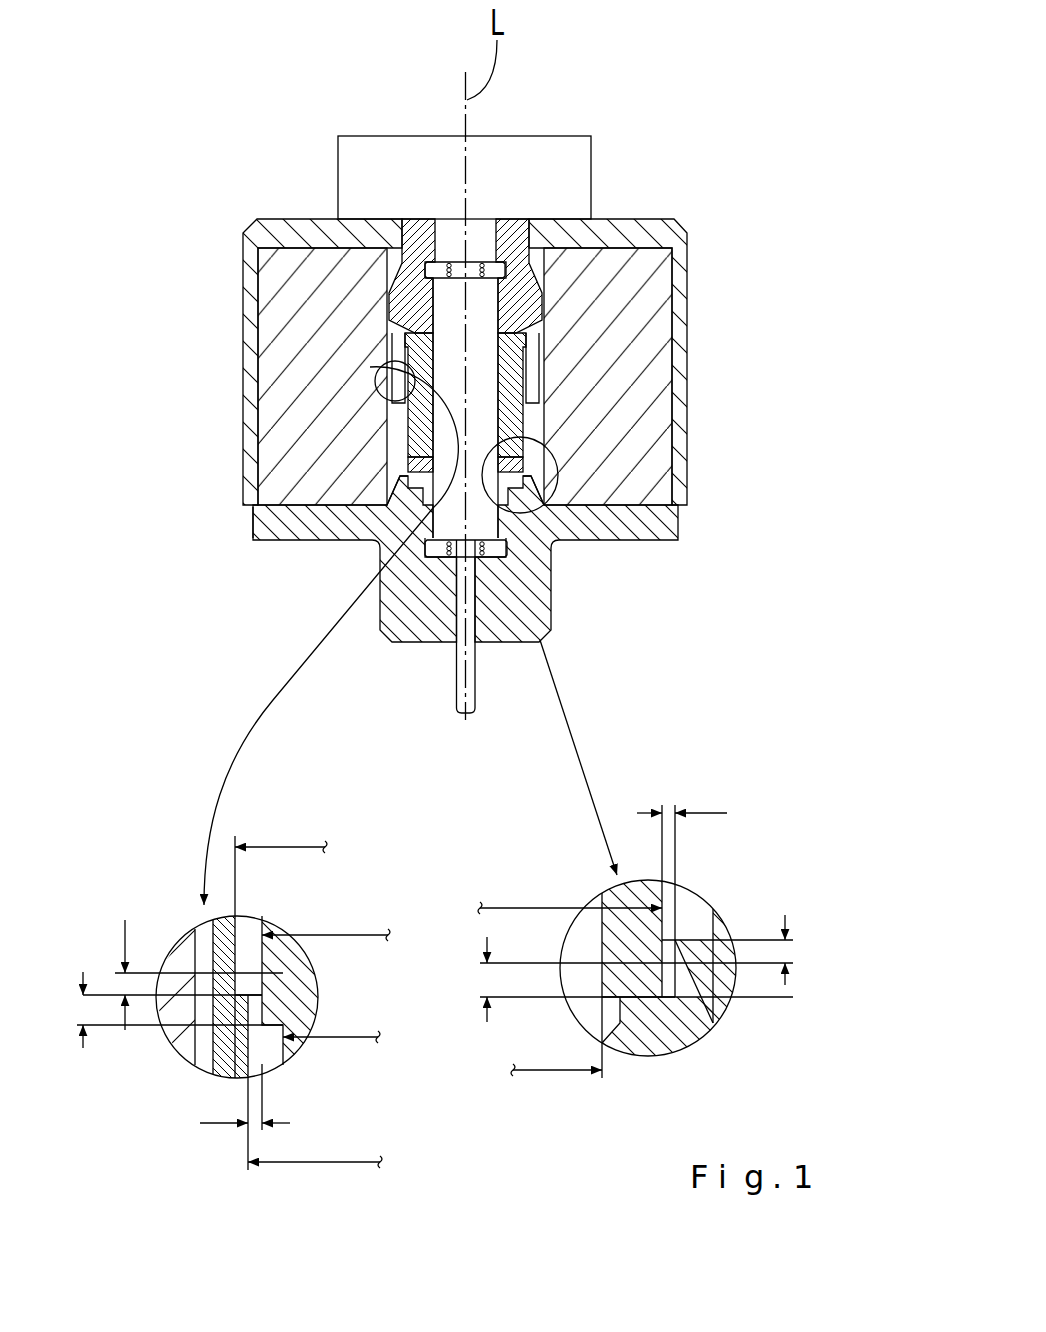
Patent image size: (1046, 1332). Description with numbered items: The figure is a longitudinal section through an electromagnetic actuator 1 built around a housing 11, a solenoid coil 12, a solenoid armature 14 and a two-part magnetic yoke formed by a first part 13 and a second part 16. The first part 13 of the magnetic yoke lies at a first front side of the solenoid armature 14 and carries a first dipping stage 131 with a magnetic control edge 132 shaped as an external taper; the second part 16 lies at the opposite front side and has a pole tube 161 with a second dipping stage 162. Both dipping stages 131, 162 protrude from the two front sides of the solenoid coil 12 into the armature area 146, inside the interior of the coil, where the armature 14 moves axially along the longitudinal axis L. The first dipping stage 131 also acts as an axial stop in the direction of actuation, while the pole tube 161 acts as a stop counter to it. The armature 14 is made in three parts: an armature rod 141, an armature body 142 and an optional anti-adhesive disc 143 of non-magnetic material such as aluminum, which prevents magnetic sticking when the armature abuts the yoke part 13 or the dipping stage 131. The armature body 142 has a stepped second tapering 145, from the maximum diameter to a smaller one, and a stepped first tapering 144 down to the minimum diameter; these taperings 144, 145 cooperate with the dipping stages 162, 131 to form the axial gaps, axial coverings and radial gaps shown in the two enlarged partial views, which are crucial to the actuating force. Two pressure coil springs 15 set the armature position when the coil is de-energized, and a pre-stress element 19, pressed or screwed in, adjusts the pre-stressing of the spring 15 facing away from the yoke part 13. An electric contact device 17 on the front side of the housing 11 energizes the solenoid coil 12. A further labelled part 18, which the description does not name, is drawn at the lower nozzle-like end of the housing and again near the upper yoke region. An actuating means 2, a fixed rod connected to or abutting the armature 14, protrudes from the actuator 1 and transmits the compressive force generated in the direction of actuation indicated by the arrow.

The electromagnetic actuator 1 is at (706, 238).
The actuating means 2 is at (477, 680).
The housing 11 is at (678, 395).
The solenoid coil 12 is at (611, 374).
The first part of the magnetic yoke 13 is at (460, 554).
The solenoid armature 14 is at (311, 401).
The spring elements 15 is at (402, 262).
The second part of the magnetic yoke 16 is at (515, 220).
The electric contact device 17 is at (515, 165).
The nozzle 18 is at (530, 268).
The pre-stress element 19 is at (448, 242).
The first dipping stage 131 is at (548, 455).
The magnetic control edge 132 is at (556, 497).
The armature rod 141 is at (432, 272).
The armature body 142 is at (408, 462).
The anti-adhesive disc 143 is at (392, 467).
The first tapering 144 is at (548, 430).
The second tapering 145 is at (533, 347).
The armature area 146 is at (252, 528).
The pole tube 161 is at (398, 348).
The second dipping stage 162 is at (412, 400).